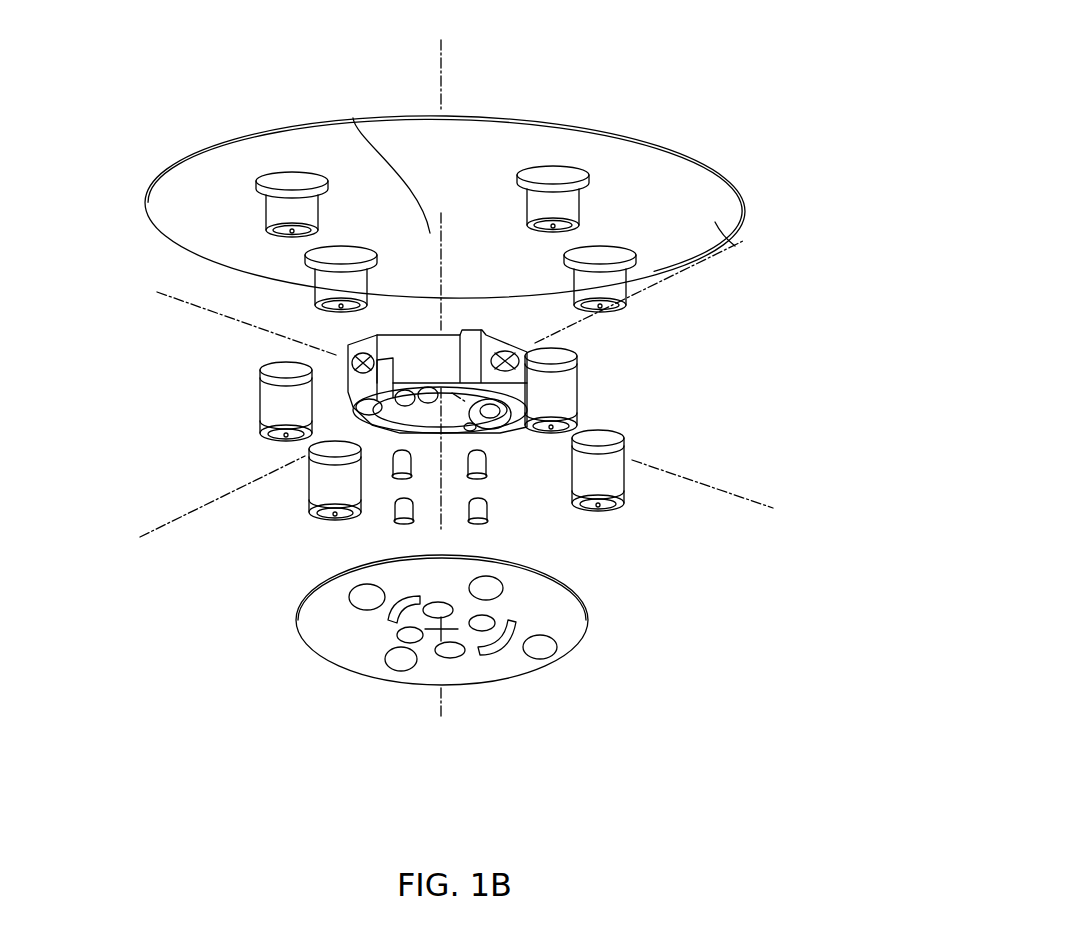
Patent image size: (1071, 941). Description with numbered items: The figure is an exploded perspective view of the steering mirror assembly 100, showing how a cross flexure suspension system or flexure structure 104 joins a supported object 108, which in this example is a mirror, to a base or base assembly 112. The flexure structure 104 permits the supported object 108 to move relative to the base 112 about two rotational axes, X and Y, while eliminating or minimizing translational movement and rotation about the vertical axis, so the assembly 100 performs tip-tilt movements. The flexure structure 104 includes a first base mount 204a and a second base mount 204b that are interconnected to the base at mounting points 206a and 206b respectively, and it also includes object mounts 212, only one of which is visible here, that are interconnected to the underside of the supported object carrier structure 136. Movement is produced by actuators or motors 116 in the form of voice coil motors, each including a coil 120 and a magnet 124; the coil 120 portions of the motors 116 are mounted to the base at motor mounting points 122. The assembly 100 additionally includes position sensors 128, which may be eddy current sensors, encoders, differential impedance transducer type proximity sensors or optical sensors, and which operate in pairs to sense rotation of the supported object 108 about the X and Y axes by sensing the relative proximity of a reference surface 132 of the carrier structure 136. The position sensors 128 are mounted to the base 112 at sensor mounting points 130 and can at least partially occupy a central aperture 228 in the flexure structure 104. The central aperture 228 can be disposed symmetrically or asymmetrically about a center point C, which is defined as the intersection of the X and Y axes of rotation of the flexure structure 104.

The assembly 100 is at (667, 81).
The flexure structure 104 is at (461, 475).
The supported object 108 is at (723, 178).
The base 112 is at (458, 654).
The actuators 116 is at (267, 443).
The coil 120 is at (267, 392).
The motor mounting points 122 is at (362, 607).
The magnet 124 is at (278, 208).
The position sensors 128 is at (397, 480).
The sensor mounting points 130 is at (412, 645).
The reference surface 132 is at (353, 118).
The carrier structure 136 is at (721, 228).
The first base mount 204a is at (518, 436).
The second base mount 204b is at (360, 420).
The mounting point 206a is at (482, 652).
The mounting point 206b is at (390, 622).
The object mounts 212 is at (572, 352).
The central aperture 228 is at (468, 396).
The center point C is at (485, 443).
The X axis X is at (733, 497).
The Y axis Y is at (697, 274).